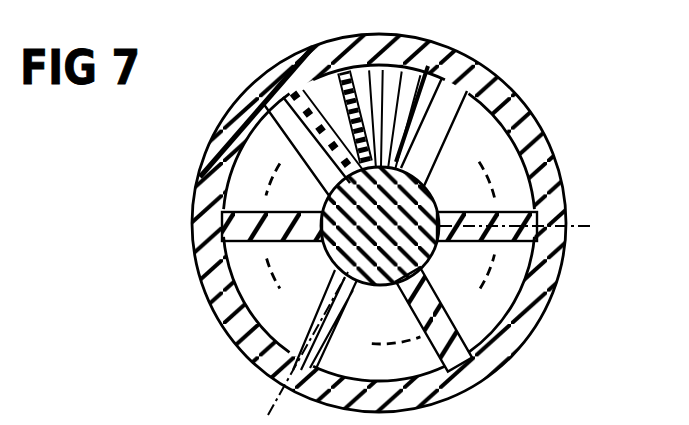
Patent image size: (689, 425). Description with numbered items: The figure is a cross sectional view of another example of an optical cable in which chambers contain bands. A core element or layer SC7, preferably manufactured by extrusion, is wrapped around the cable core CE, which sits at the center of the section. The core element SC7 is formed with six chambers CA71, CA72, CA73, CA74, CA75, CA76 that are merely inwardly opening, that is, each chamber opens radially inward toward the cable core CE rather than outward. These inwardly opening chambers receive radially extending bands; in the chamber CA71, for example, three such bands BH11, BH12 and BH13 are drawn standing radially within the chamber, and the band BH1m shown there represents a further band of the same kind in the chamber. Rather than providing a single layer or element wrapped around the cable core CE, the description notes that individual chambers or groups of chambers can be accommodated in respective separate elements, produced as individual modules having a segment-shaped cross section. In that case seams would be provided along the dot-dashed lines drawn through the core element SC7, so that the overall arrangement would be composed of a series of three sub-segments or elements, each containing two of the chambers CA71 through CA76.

The band BH11 is at (343, 70).
The band BH12 is at (393, 62).
The band BH13 is at (440, 66).
The bore hole BH1m is at (270, 143).
The chamber CA71 is at (262, 78).
The chamber CA72 is at (503, 157).
The chamber CA73 is at (507, 268).
The chamber CA74 is at (413, 362).
The chamber CA75 is at (243, 273).
The chamber CA76 is at (245, 183).
The core element SC7 is at (575, 225).
The cable core CE is at (335, 272).